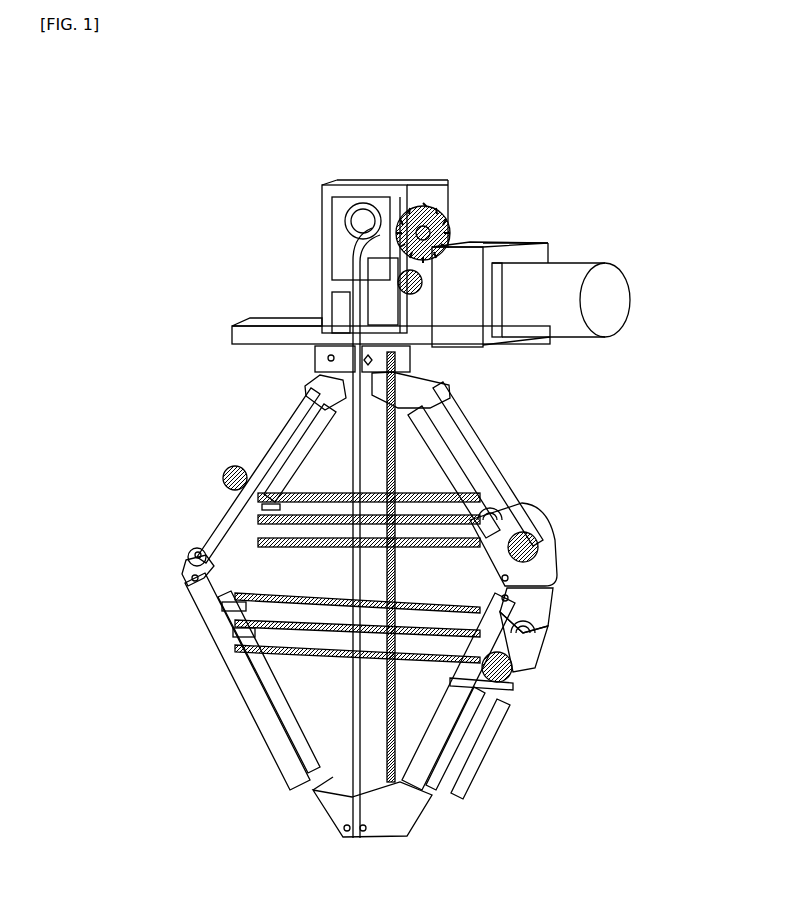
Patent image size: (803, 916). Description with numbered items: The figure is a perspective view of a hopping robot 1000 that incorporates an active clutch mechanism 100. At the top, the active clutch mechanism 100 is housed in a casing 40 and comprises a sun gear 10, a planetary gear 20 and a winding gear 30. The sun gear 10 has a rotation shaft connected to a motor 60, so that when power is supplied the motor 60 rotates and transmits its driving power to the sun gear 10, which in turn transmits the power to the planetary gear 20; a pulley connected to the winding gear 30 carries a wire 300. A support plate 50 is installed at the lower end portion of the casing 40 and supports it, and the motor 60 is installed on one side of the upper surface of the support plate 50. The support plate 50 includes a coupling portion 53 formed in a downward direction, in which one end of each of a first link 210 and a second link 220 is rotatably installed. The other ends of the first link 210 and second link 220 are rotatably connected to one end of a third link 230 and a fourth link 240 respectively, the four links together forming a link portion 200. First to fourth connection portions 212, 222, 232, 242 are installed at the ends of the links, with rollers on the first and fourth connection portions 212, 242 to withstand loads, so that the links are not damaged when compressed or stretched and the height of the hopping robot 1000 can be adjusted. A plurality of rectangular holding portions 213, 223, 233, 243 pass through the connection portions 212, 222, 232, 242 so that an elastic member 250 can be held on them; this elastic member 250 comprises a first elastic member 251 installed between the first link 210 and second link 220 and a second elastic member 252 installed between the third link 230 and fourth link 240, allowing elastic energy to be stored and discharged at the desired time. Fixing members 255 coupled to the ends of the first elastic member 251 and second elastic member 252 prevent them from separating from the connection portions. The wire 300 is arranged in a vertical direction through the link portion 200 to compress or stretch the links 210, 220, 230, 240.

The hopping robot 1000 is at (263, 171).
The sun gear 10 is at (440, 285).
The planetary gear 20 is at (372, 268).
The winding gear 30 is at (436, 210).
The casing 40 is at (368, 180).
The support plate 50 is at (265, 322).
The coupling portion 53 is at (314, 356).
The motor 60 is at (562, 242).
The active clutch mechanism 100 is at (646, 252).
The link portion 200 is at (588, 587).
The first link 210 is at (485, 446).
The first connection portion 212 is at (540, 562).
The first holding portion 213 is at (515, 528).
The second link 220 is at (274, 433).
The second connection portion 222 is at (205, 532).
The second holding portion 223 is at (250, 497).
The third link 230 is at (490, 720).
The third connection portion 232 is at (527, 661).
The third holding portion 233 is at (540, 632).
The fourth link 240 is at (251, 700).
The fourth connection portion 242 is at (198, 597).
The fourth holding portion 243 is at (226, 620).
The elastic member 250 is at (505, 765).
The first elastic member 251 is at (452, 727).
The second elastic member 252 is at (478, 721).
The fixing member 255 is at (228, 470).
The wire 300 is at (356, 712).